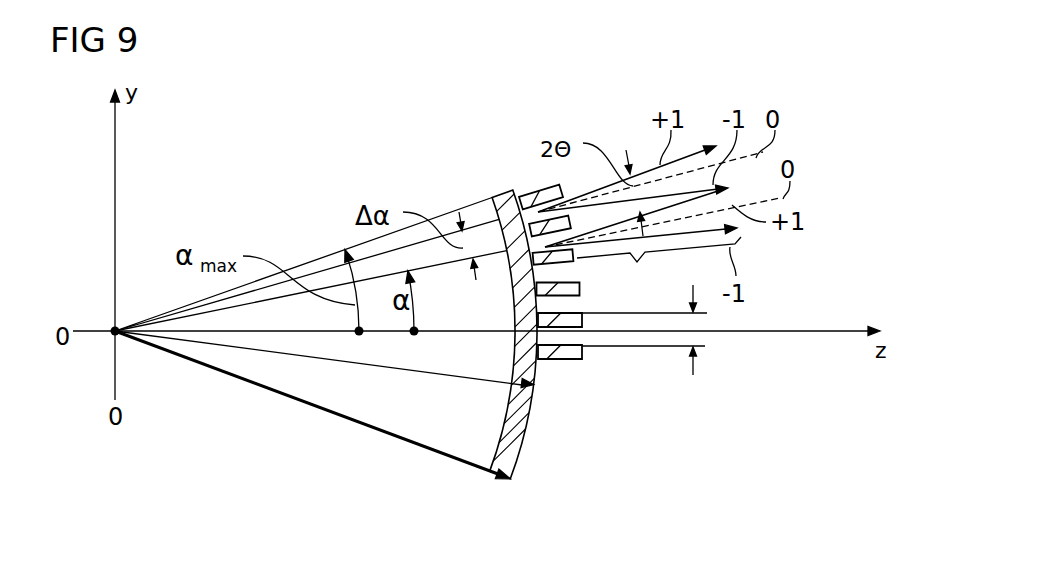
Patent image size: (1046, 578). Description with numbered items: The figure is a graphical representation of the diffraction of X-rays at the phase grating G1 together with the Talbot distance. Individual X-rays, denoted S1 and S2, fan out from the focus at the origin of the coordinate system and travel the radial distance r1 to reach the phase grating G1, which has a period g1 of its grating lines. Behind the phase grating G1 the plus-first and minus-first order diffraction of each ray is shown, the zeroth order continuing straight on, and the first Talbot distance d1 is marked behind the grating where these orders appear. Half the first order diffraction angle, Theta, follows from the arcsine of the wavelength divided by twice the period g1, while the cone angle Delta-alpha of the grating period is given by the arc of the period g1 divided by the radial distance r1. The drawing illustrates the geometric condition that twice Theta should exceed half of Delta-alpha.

The X-ray S1 is at (333, 250).
The X-ray S2 is at (303, 277).
The phase grating G1 is at (508, 190).
The Talbot distance d1 is at (659, 270).
The period of the grating lines g1 is at (695, 338).
The radial distance from the focus to the phase grating r1 is at (503, 485).